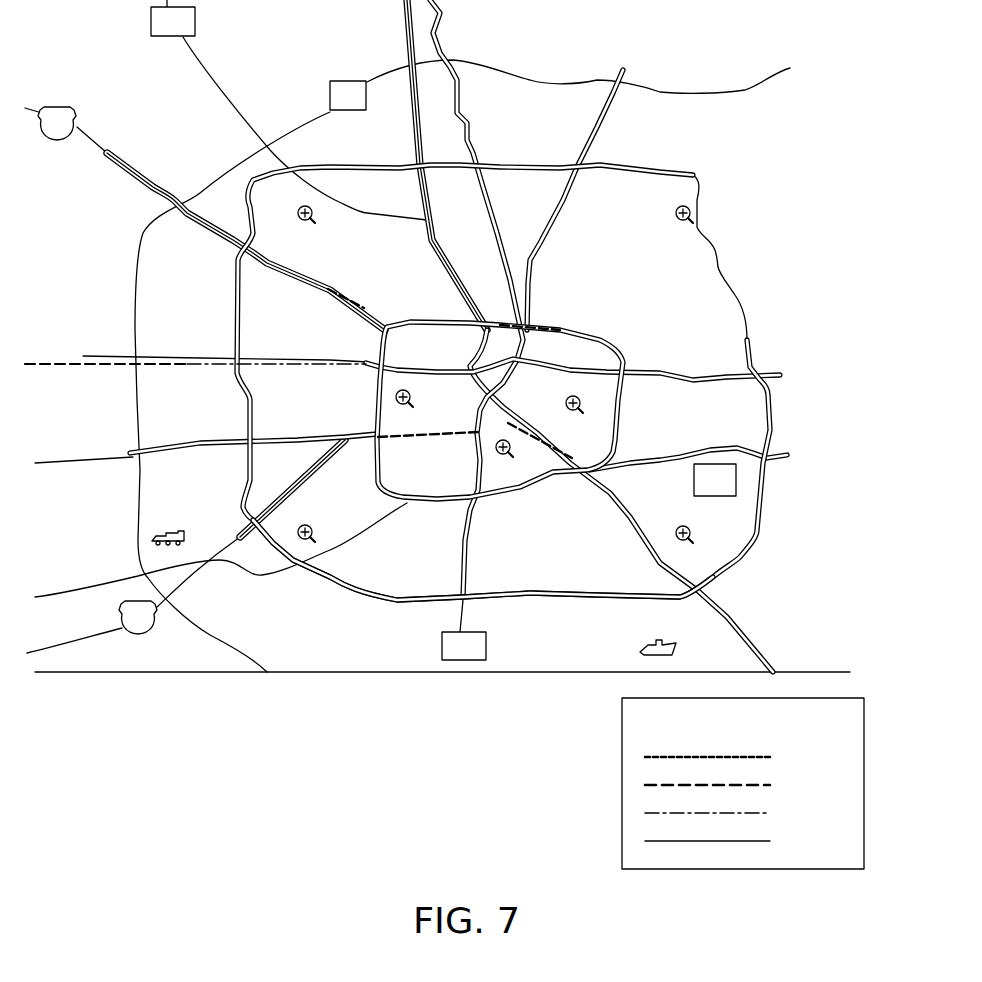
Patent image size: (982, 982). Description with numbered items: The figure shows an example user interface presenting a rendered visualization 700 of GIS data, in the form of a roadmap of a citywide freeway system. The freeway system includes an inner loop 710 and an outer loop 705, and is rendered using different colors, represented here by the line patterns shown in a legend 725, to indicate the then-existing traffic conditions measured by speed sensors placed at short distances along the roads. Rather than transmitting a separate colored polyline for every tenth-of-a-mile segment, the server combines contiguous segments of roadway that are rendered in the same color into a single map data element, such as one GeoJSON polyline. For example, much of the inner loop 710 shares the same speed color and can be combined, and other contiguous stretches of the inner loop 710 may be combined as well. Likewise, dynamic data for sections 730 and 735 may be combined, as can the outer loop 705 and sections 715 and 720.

The rendered visualization 700 is at (433, 336).
The outer loop 705 is at (513, 600).
The inner loop 710 is at (422, 501).
The section 715 is at (322, 368).
The section 720 is at (402, 440).
The legend 725 is at (622, 738).
The section 730 is at (550, 330).
The section 735 is at (388, 400).